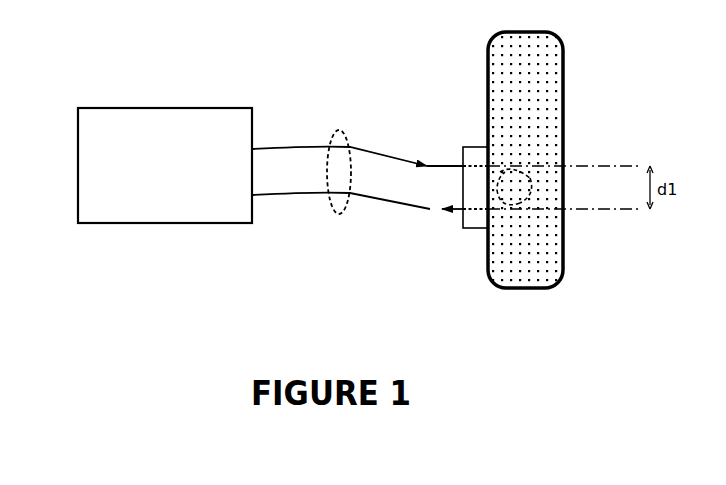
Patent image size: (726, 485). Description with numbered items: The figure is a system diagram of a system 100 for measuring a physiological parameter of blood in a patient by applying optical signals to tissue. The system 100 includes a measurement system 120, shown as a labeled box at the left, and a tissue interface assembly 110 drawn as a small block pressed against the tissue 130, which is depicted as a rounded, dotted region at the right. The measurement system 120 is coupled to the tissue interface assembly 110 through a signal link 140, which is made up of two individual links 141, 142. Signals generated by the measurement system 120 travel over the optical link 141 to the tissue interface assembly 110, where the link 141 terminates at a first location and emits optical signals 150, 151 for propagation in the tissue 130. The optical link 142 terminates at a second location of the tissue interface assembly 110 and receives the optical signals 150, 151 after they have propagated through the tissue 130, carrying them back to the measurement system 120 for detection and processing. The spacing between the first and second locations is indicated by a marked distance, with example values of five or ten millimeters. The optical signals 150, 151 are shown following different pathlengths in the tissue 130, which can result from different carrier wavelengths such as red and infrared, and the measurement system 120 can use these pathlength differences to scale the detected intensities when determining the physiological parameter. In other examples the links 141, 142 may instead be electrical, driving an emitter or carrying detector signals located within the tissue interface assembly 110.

The system 100 is at (138, 64).
The tissue interface assembly 110 is at (475, 230).
The measurement system 120 is at (148, 200).
The tissue 130 is at (500, 290).
The signal link 140 is at (338, 129).
The optical link 141 is at (269, 146).
The optical link 142 is at (269, 198).
The optical signal 150 is at (518, 172).
The optical signal 151 is at (520, 203).